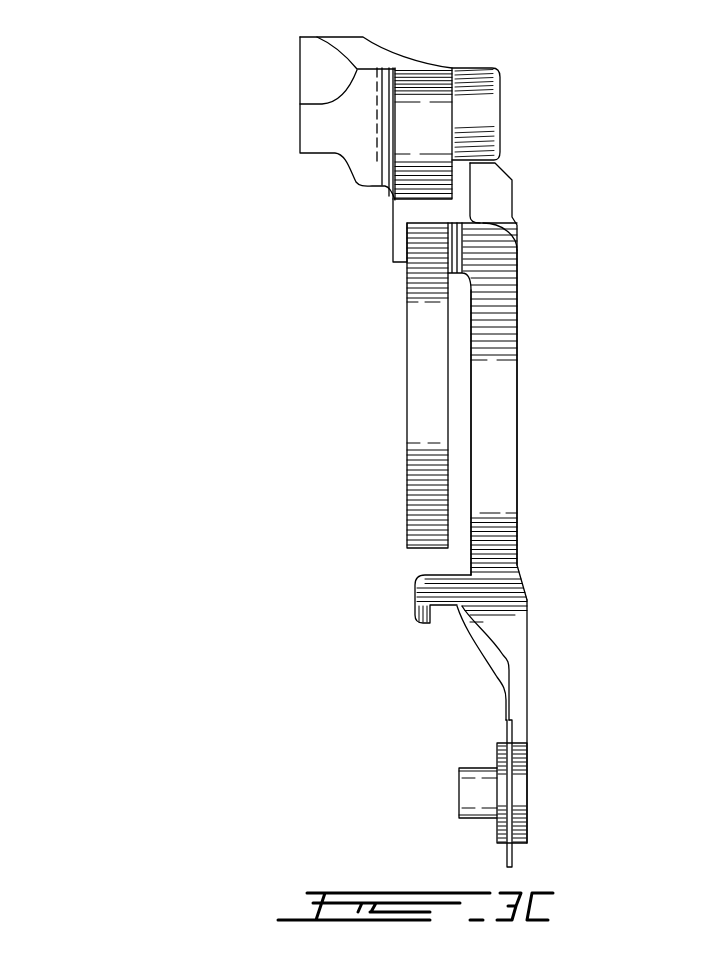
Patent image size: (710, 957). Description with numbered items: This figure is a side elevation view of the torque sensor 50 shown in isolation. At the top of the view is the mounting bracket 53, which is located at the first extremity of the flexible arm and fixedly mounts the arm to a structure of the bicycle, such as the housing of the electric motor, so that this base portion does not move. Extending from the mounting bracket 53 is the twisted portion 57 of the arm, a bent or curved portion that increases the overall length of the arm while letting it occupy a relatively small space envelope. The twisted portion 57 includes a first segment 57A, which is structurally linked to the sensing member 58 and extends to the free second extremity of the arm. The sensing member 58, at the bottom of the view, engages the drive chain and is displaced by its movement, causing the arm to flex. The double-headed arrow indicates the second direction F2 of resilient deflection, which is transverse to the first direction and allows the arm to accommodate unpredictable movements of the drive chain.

The torque sensor 50 is at (449, 440).
The mounting bracket 53 is at (379, 88).
The twisted portion 57 is at (418, 503).
The first segment 57A is at (493, 447).
The sensing member 58 is at (507, 862).
The second direction of resilient deflection F2 is at (601, 793).